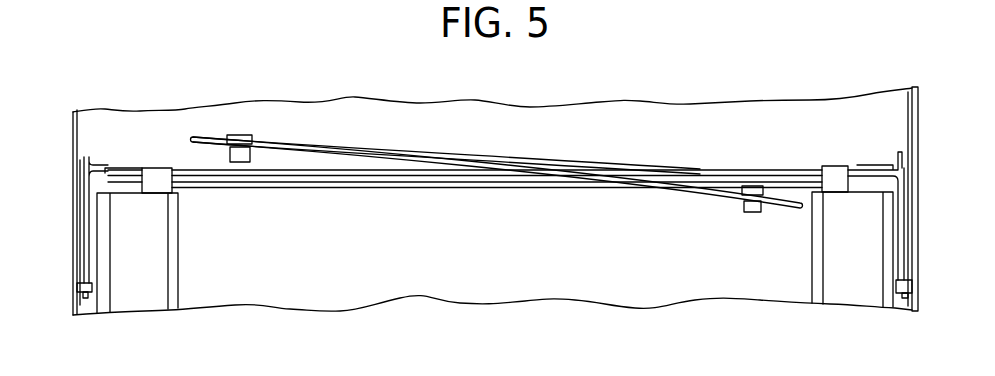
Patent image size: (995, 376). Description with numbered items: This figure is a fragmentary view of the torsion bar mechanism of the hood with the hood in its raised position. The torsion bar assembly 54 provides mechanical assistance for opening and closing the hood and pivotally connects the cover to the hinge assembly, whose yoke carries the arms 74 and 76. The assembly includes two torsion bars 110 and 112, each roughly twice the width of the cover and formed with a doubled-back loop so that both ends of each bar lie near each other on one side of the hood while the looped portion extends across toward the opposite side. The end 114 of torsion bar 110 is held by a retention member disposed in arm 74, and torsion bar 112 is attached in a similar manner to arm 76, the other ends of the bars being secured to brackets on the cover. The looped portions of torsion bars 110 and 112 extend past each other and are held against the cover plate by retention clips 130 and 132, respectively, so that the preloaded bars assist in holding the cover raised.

The torsion bar assembly 54 is at (633, 155).
The arm 74 is at (152, 274).
The arm 76 is at (822, 255).
The torsion bar 110 is at (195, 172).
The torsion bar 112 is at (288, 150).
The end of torsion bar 114 is at (152, 187).
The retention clip 130 is at (750, 212).
The retention clip 132 is at (240, 135).